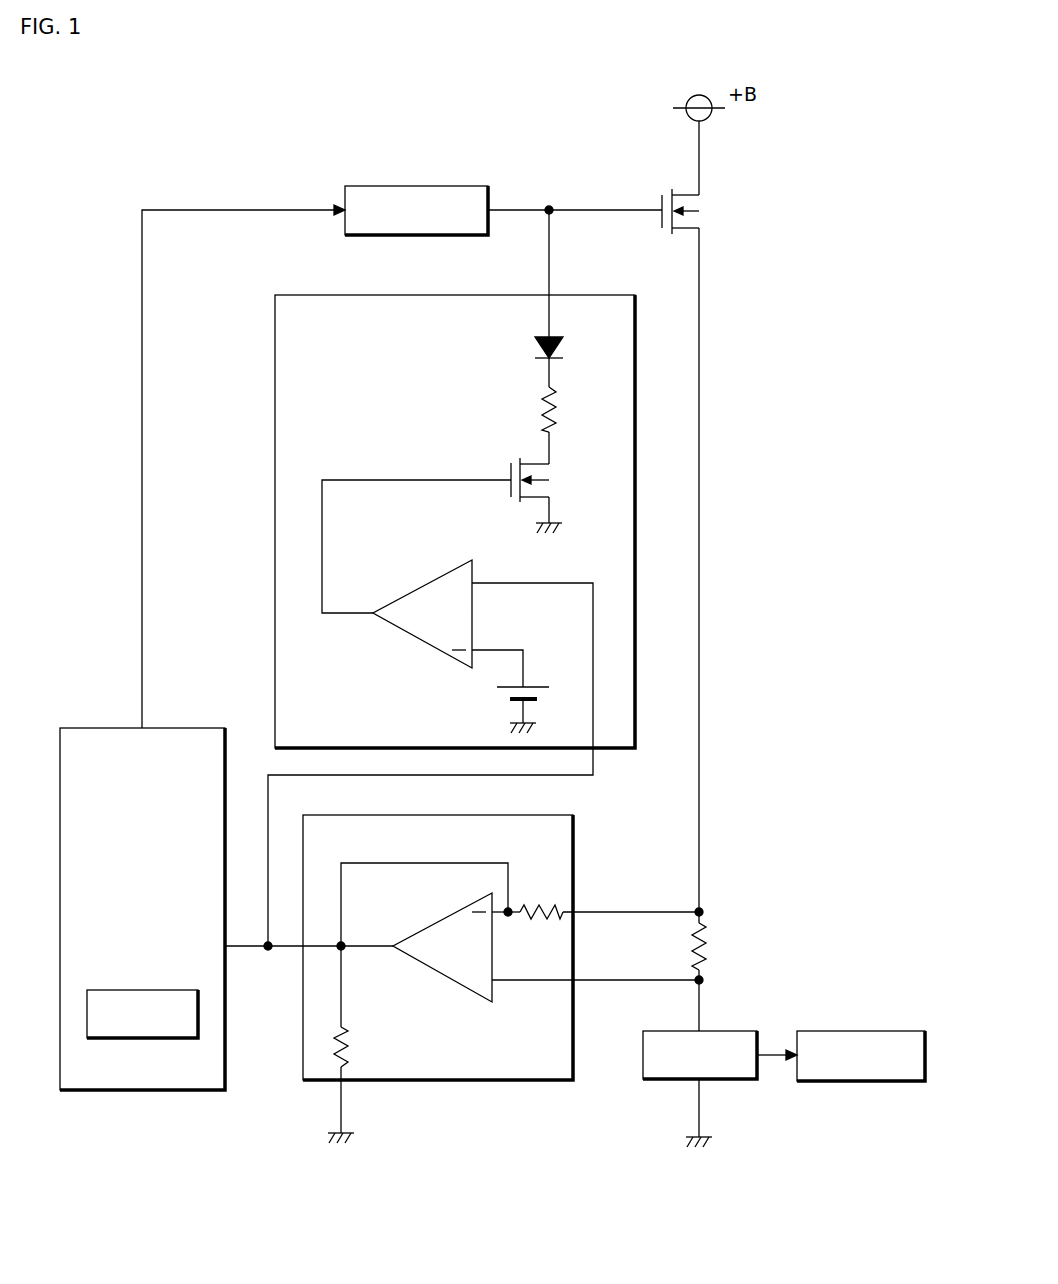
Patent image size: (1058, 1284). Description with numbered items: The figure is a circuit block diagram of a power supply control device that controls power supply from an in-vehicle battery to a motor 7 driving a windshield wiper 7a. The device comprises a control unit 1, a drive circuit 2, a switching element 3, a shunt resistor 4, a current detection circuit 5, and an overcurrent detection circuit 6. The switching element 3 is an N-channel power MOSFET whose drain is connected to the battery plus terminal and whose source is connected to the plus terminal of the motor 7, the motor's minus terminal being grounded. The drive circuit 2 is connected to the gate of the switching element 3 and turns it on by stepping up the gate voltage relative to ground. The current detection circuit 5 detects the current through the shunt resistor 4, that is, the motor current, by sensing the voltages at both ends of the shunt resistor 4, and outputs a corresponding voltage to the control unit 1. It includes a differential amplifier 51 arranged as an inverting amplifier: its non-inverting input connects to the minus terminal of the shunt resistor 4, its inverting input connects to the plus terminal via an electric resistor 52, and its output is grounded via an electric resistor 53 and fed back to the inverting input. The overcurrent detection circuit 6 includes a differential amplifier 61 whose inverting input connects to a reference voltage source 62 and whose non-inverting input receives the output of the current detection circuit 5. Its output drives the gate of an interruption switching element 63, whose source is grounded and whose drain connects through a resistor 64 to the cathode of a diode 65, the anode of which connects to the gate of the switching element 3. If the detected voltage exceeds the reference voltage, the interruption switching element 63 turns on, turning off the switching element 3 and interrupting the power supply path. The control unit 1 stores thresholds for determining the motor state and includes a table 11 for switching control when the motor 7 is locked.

The control unit 1 is at (203, 728).
The table 11 is at (148, 990).
The drive circuit 2 is at (418, 186).
The switching element 3 is at (665, 187).
The shunt resistor 4 is at (708, 948).
The current detection circuit 5 is at (575, 829).
The differential amplifier 51 is at (426, 930).
The electric resistor 52 is at (533, 905).
The electric resistor 53 is at (350, 1047).
The overcurrent detection circuit 6 is at (637, 323).
The differential amplifier 61 is at (424, 585).
The reference voltage source 62 is at (544, 687).
The interruption switching element 63 is at (513, 458).
The resistor 64 is at (565, 407).
The diode 65 is at (565, 350).
The motor 7 is at (738, 1031).
The windshield wiper 7a is at (876, 1031).